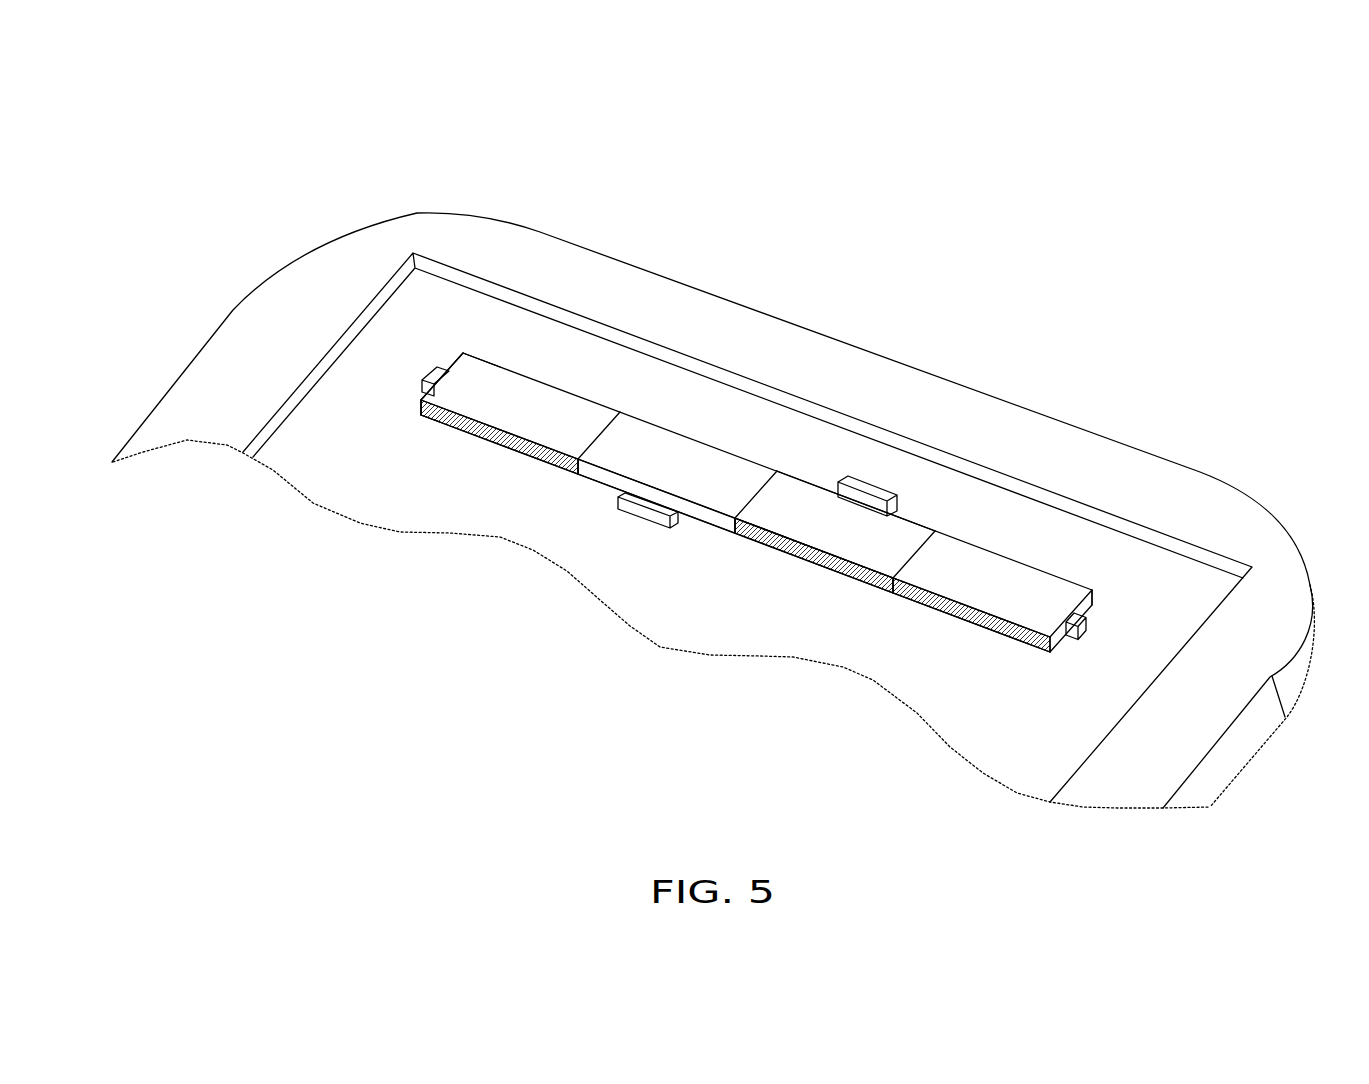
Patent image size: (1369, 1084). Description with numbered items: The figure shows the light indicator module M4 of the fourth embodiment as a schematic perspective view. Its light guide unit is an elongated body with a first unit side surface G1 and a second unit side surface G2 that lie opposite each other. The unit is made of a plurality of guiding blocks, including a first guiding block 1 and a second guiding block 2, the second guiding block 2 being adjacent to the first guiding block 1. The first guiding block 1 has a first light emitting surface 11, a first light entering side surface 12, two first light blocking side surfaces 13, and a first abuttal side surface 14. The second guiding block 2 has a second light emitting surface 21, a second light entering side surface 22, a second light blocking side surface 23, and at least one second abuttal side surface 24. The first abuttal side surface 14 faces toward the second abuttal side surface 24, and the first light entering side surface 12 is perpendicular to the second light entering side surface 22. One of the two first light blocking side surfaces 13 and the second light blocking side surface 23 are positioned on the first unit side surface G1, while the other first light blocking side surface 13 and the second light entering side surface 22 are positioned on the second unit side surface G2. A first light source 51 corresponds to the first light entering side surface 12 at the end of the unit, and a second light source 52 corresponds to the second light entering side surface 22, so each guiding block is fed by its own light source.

The light indicator module M4 is at (131, 127).
The first guiding block 1 is at (1257, 415).
The first light emitting surface 11 is at (1055, 595).
The first light entering side surface 12 is at (1092, 590).
The first light blocking side surfaces 13 is at (1000, 555).
The first abuttal side surface 14 is at (940, 537).
The second guiding block 2 is at (1007, 330).
The second light emitting surface 21 is at (820, 523).
The second light entering side surface 22 is at (913, 553).
The second light blocking side surface 23 is at (790, 470).
The second abuttal side surface 24 is at (925, 535).
The first light source 51 is at (1088, 628).
The second light source 52 is at (867, 494).
The first unit side surface G1 is at (433, 413).
The second unit side surface G2 is at (477, 356).